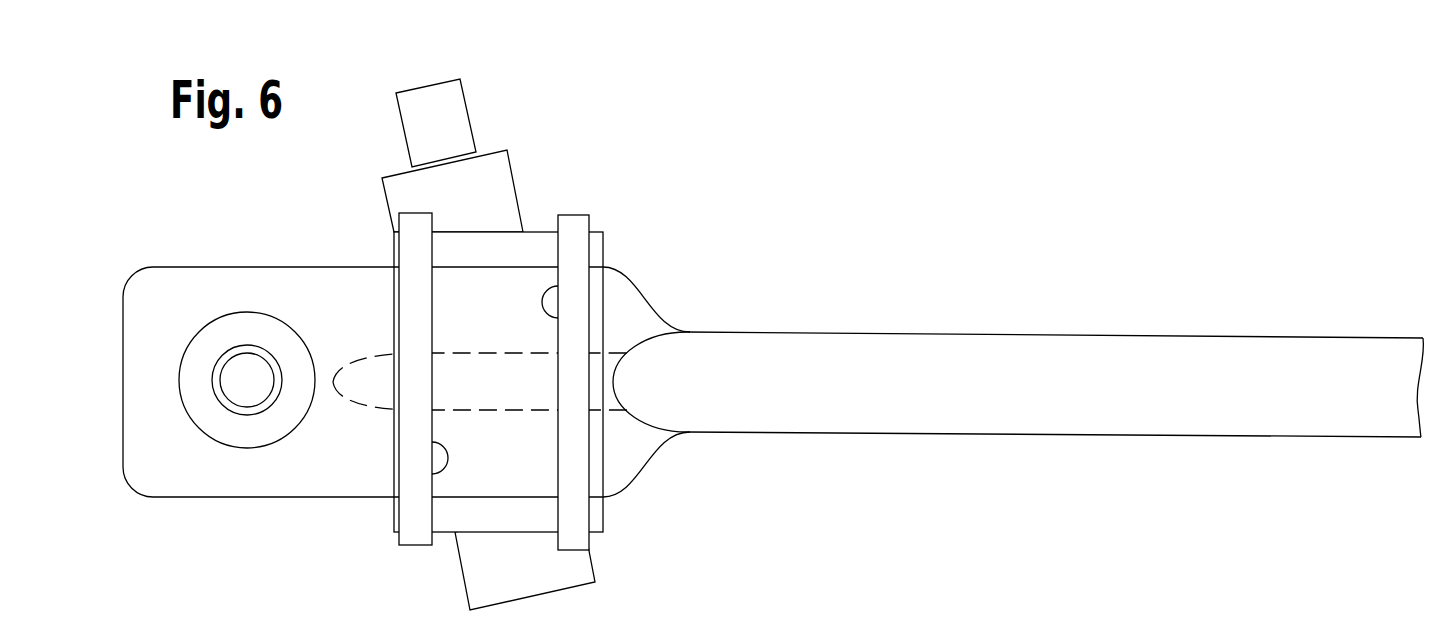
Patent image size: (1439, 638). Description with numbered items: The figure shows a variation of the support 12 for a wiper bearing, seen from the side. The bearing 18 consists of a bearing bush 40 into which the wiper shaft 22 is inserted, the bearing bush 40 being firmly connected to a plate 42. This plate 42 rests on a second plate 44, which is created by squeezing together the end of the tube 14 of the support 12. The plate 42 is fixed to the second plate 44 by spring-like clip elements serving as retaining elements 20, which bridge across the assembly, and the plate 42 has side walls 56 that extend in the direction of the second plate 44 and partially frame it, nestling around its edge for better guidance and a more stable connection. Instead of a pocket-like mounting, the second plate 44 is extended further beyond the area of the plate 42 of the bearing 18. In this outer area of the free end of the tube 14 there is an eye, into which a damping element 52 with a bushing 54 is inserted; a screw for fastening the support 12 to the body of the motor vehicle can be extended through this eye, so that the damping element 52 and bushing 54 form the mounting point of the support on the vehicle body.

The support 12 is at (812, 284).
The tube 14 is at (960, 410).
The bearing 18 is at (485, 151).
The retaining elements 20 is at (410, 538).
The wiper shaft 22 is at (453, 113).
The bearing bush 40 is at (503, 210).
The plate 42 is at (595, 233).
The second plate 44 is at (298, 463).
The damping element 52 is at (205, 420).
The bushing 54 is at (247, 412).
The side walls 56 is at (600, 248).